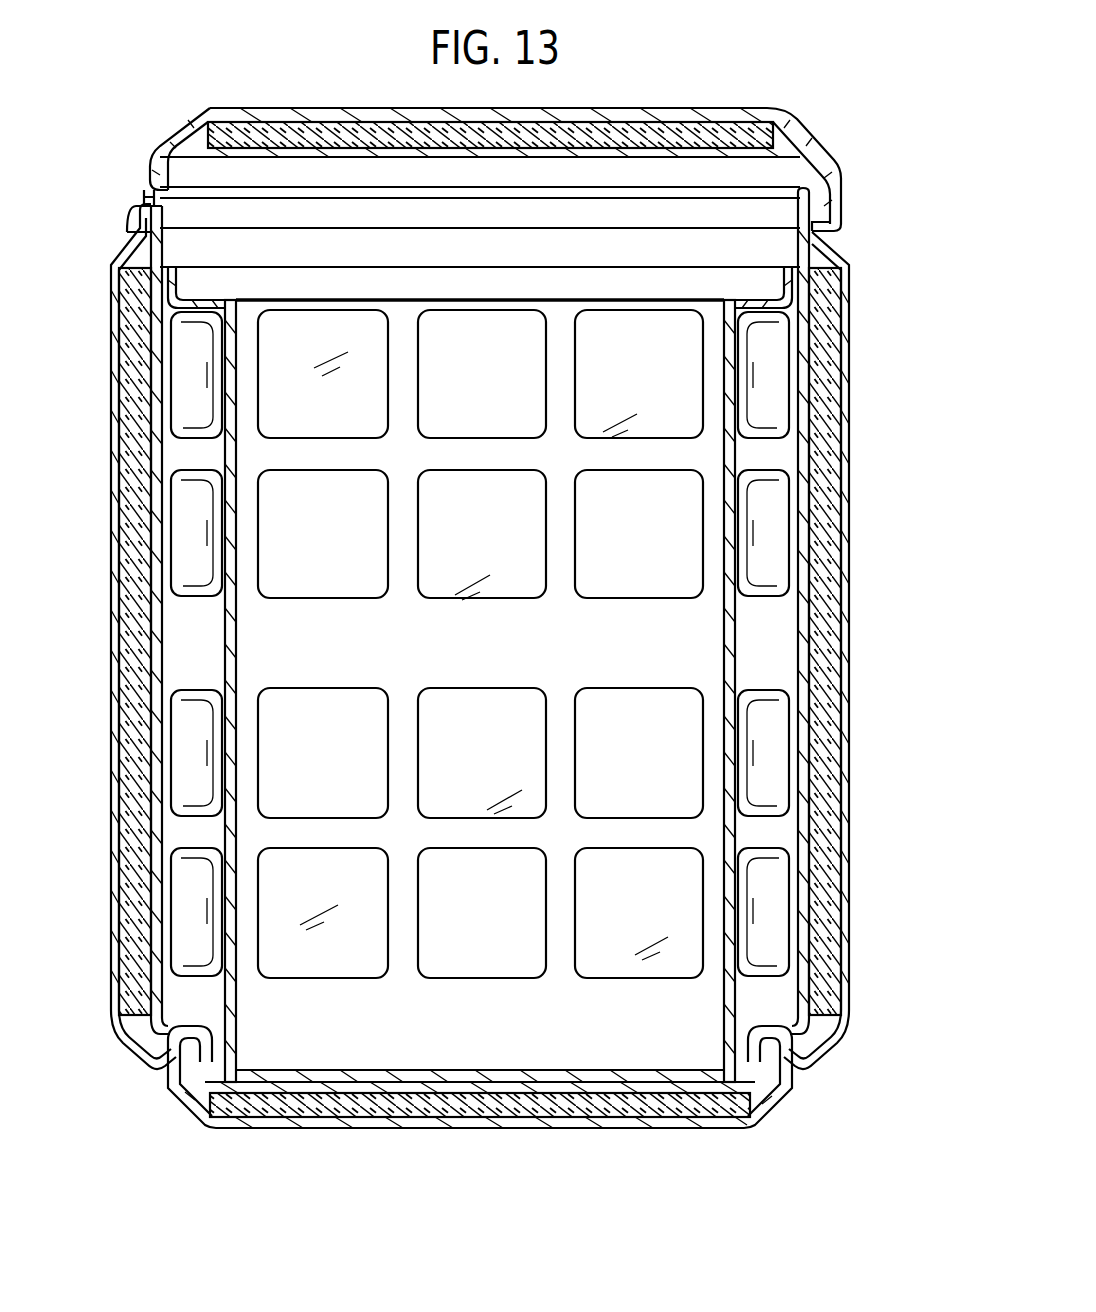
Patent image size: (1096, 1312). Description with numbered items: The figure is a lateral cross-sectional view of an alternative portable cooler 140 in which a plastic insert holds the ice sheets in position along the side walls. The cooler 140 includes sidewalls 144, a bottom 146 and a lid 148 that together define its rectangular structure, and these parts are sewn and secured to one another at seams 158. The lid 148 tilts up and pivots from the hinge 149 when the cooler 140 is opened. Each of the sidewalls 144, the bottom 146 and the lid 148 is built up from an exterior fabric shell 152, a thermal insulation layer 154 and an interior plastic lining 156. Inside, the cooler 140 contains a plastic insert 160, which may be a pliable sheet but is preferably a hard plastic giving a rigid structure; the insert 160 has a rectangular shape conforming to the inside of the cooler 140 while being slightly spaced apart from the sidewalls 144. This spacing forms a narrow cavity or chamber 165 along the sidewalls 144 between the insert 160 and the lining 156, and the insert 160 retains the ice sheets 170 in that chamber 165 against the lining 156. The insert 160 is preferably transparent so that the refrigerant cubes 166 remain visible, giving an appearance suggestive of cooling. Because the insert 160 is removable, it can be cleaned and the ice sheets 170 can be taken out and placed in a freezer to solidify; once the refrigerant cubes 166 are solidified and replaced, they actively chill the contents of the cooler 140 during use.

The cooler 140 is at (778, 66).
The sidewalls 144 is at (100, 548).
The bottom 146 is at (612, 1128).
The lid 148 is at (326, 108).
The hinge 149 is at (142, 197).
The exterior fabric shell 152 is at (114, 468).
The thermal insulation layer 154 is at (136, 420).
The interior plastic lining 156 is at (155, 372).
The seams 158 is at (128, 222).
The plastic insert 160 is at (237, 655).
The cavity or chamber 165 is at (217, 659).
The refrigerant cubes 166 is at (185, 872).
The ice sheets 170 is at (172, 636).